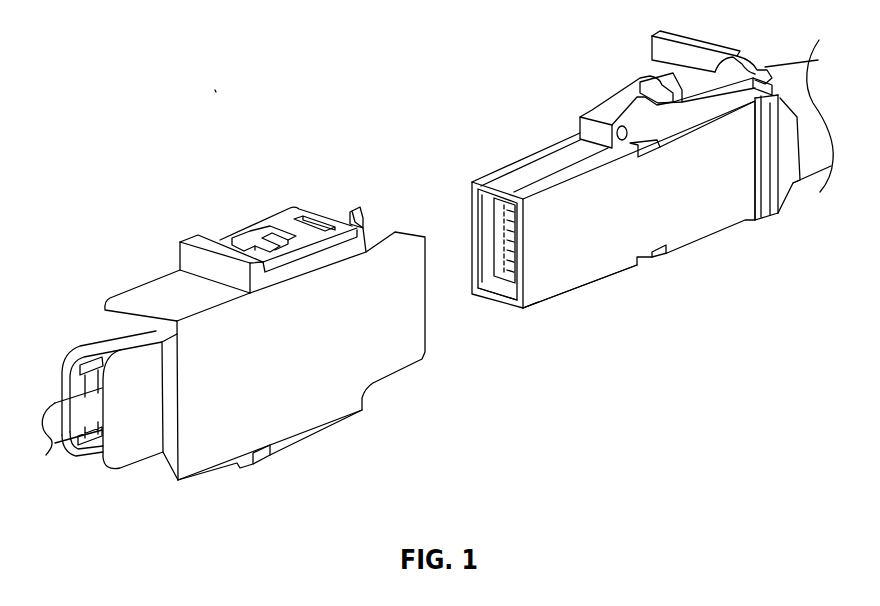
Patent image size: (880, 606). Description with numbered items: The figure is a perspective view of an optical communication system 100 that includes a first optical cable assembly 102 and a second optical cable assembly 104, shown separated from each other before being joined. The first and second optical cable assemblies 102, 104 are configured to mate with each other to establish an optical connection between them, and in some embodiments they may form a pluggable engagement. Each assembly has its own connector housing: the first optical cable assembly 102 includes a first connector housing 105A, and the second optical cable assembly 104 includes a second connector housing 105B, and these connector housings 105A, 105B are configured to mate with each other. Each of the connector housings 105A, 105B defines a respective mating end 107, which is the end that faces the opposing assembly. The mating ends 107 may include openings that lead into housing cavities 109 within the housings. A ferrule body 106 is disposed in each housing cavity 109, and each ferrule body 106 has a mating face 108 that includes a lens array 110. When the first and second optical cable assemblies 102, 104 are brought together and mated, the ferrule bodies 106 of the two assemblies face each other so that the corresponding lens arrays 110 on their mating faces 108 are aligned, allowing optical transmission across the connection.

The optical communication system 100 is at (208, 94).
The first optical cable assembly 102 is at (548, 83).
The second optical cable assembly 104 is at (184, 211).
The first connector housing 105A is at (610, 254).
The second connector housing 105B is at (330, 403).
The ferrule body 106 is at (503, 202).
The mating end 107 is at (370, 204).
The mating face 108 is at (489, 240).
The housing cavity 109 is at (508, 291).
The lens array 110 is at (497, 277).